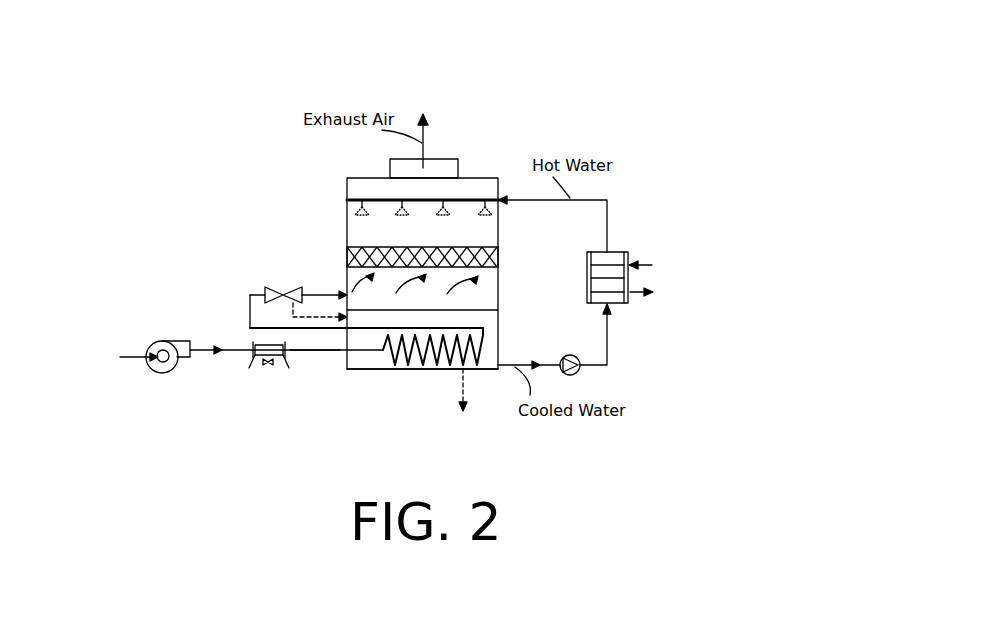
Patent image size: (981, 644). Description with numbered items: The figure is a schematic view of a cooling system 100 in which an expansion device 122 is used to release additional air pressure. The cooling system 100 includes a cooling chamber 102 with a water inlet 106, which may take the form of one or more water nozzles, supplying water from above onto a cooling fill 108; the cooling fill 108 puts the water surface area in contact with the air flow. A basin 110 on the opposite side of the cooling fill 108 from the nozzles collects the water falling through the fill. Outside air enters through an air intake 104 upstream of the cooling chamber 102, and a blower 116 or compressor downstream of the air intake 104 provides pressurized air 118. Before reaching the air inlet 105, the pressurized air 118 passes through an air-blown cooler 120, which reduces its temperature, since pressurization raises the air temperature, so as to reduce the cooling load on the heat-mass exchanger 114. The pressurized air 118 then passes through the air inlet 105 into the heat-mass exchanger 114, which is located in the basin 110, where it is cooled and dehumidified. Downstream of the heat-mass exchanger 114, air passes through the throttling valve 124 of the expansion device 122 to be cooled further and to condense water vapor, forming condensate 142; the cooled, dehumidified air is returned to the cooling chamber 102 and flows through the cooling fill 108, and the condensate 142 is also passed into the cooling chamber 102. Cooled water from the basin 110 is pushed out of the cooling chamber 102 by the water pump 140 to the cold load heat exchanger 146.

The cooling system 100 is at (471, 113).
The cooling chamber 102 is at (346, 268).
The air intake 104 is at (128, 358).
The air inlet 105 is at (302, 352).
The water inlet 106 is at (350, 200).
The cooling fill 108 is at (490, 262).
The basin 110 is at (367, 370).
The heat-mass exchanger 114 is at (486, 355).
The blower 116 is at (155, 341).
The pressurized air 118 is at (205, 352).
The air-blown cooler 120 is at (249, 357).
The expansion device 122 is at (230, 317).
The throttling valve 124 is at (262, 287).
The water pump 140 is at (573, 374).
The condensate 142 is at (324, 318).
The cold load heat exchanger 146 is at (620, 250).